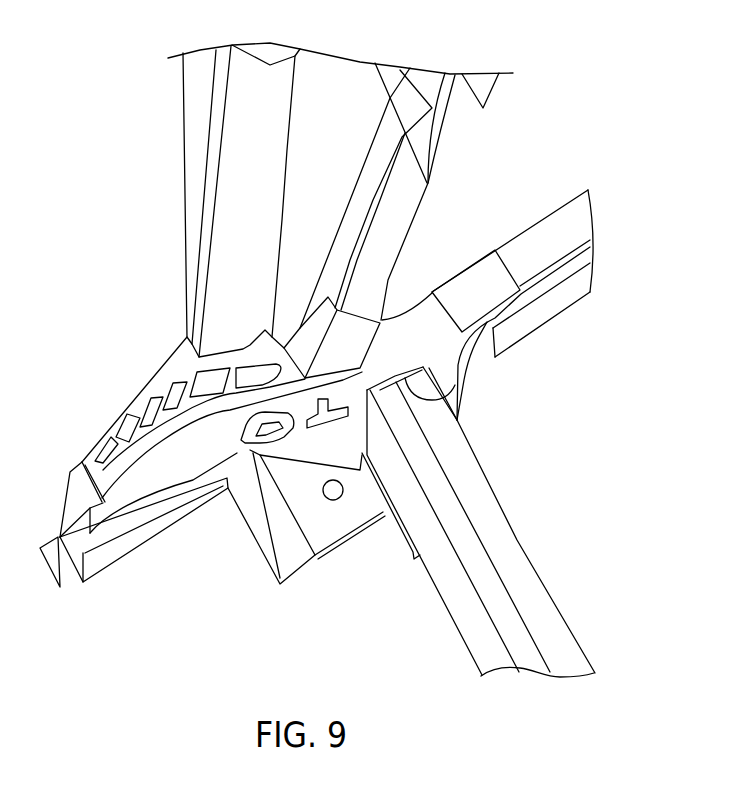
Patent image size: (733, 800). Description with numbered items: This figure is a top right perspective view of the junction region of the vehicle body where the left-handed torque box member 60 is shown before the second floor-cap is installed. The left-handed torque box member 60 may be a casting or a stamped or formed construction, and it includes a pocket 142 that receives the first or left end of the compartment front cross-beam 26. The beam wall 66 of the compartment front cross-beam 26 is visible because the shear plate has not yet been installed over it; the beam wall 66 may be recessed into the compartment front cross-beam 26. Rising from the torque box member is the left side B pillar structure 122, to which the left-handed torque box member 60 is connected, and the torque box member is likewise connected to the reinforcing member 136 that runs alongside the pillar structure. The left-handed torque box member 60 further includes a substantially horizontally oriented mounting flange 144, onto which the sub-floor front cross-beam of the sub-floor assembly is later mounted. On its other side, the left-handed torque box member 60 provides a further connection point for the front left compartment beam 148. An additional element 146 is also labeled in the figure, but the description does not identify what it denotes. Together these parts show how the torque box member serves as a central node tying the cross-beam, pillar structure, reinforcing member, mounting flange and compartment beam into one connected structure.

The compartment front cross-beam 26 is at (553, 639).
The left-handed torque box member 60 is at (165, 380).
The beam wall 66 is at (476, 544).
The left side "B" pillar structure 122 is at (232, 112).
The reinforcing member 136 is at (398, 232).
The pocket 142 is at (457, 393).
The mounting flange 144 is at (308, 518).
The flange 146 is at (398, 542).
The front left compartment beam 148 is at (552, 242).